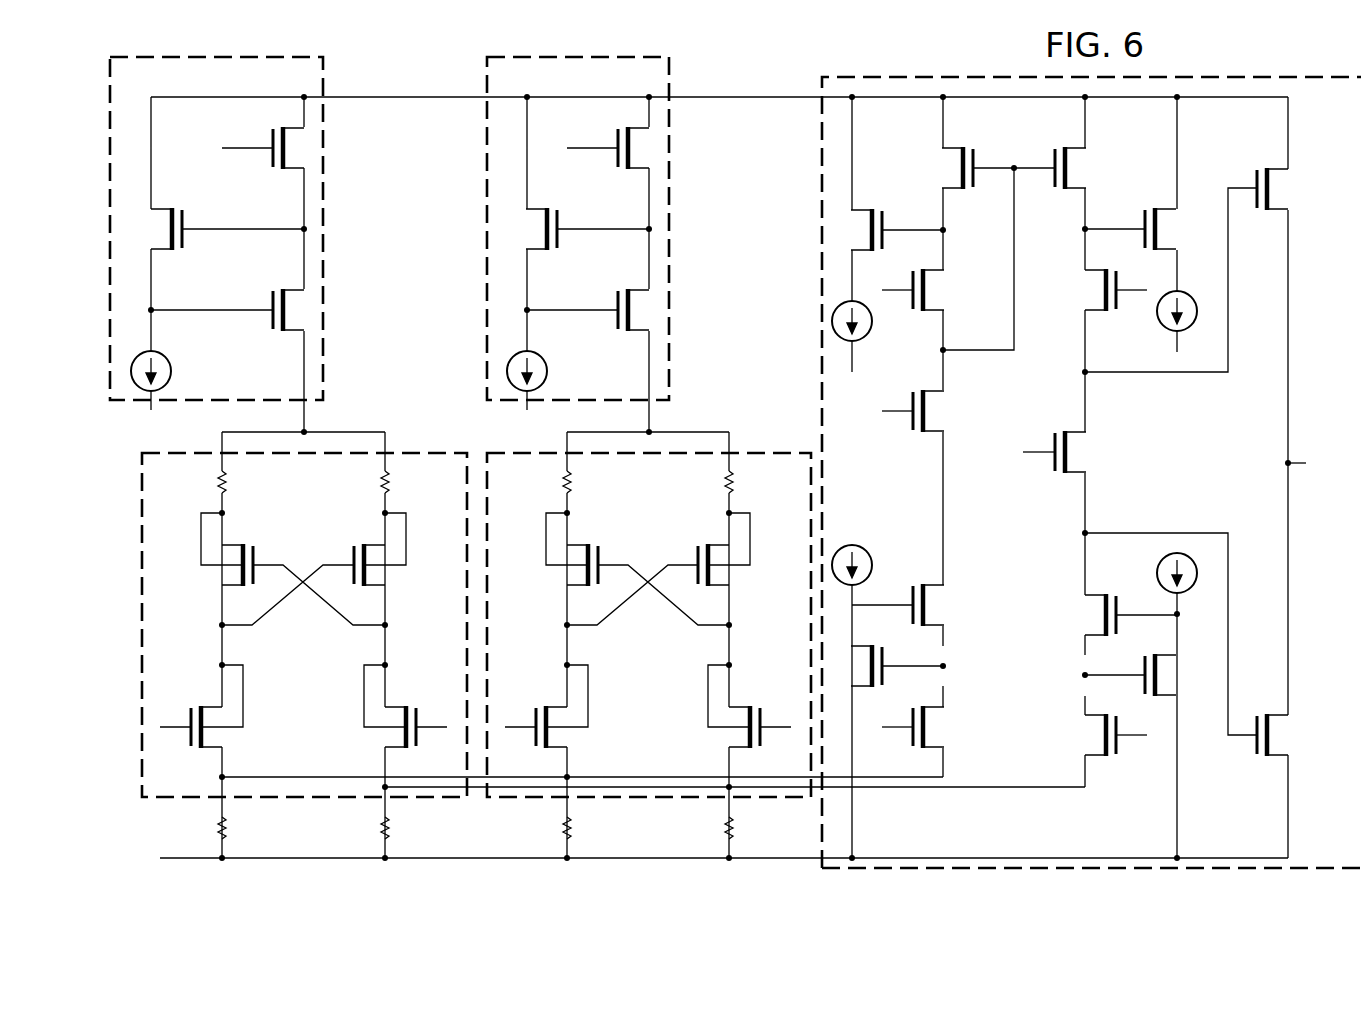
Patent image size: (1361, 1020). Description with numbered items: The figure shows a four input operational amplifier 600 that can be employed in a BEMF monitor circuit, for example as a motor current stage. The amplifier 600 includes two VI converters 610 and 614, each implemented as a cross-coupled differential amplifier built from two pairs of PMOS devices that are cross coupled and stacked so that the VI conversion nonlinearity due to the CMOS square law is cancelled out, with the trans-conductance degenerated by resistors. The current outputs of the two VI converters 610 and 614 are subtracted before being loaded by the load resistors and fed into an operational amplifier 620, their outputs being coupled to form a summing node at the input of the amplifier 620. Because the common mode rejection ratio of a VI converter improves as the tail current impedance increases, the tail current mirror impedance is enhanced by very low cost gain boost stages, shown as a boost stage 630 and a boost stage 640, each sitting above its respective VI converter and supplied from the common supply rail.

The four input operational amplifier 600 is at (397, 81).
The VI converter 610 is at (418, 447).
The VI converter 614 is at (763, 447).
The operational amplifier 620 is at (1295, 73).
The boost stage 630 is at (334, 226).
The boost stage 640 is at (679, 226).